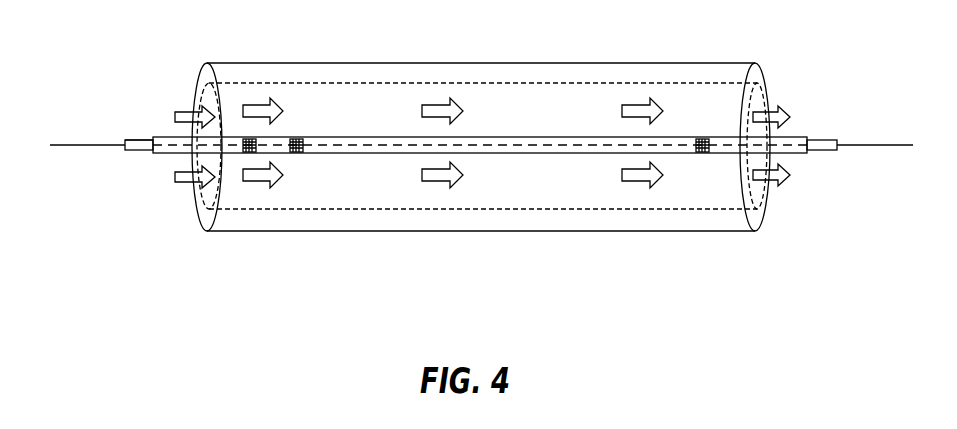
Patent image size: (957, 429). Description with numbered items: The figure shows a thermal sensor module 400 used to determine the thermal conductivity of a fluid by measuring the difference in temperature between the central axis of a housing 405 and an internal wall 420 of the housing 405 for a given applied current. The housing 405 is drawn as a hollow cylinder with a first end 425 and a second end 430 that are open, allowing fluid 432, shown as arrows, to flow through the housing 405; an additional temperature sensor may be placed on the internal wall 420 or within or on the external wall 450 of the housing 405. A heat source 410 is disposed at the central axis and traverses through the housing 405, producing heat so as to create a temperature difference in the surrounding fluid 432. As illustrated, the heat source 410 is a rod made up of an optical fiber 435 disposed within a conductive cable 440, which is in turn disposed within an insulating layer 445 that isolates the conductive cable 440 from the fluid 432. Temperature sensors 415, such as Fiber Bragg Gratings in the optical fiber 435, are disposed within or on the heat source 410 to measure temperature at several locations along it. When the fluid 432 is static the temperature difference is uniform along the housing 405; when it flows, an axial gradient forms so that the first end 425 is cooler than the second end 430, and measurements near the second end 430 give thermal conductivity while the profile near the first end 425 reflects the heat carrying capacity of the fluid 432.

The thermal sensor module 400 is at (636, 268).
The housing 405 is at (484, 149).
The heat source 410 is at (133, 131).
The temperature sensor 415 is at (246, 137).
The internal wall 420 is at (356, 84).
The first end 425 is at (201, 63).
The second end 430 is at (760, 63).
The fluid 432 is at (437, 183).
The optical fiber 435 is at (110, 145).
The conductive cable 440 is at (143, 150).
The insulating layer 445 is at (167, 137).
The external wall 450 is at (518, 231).